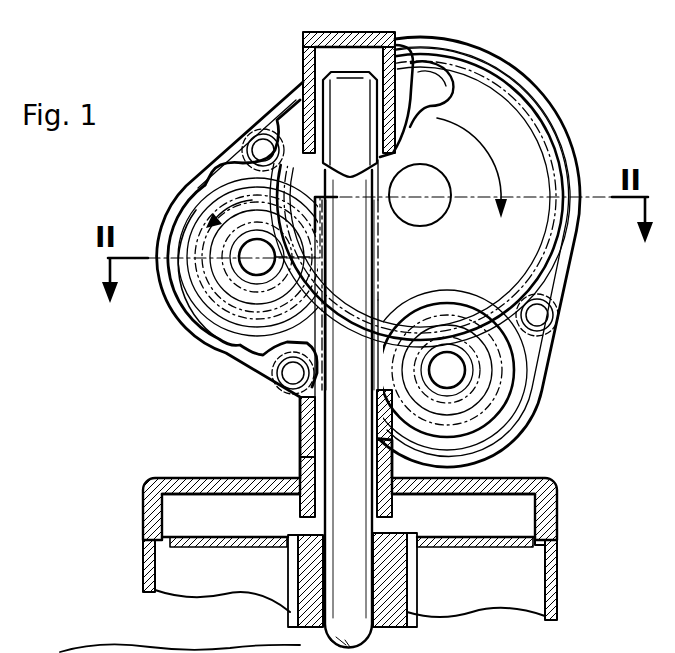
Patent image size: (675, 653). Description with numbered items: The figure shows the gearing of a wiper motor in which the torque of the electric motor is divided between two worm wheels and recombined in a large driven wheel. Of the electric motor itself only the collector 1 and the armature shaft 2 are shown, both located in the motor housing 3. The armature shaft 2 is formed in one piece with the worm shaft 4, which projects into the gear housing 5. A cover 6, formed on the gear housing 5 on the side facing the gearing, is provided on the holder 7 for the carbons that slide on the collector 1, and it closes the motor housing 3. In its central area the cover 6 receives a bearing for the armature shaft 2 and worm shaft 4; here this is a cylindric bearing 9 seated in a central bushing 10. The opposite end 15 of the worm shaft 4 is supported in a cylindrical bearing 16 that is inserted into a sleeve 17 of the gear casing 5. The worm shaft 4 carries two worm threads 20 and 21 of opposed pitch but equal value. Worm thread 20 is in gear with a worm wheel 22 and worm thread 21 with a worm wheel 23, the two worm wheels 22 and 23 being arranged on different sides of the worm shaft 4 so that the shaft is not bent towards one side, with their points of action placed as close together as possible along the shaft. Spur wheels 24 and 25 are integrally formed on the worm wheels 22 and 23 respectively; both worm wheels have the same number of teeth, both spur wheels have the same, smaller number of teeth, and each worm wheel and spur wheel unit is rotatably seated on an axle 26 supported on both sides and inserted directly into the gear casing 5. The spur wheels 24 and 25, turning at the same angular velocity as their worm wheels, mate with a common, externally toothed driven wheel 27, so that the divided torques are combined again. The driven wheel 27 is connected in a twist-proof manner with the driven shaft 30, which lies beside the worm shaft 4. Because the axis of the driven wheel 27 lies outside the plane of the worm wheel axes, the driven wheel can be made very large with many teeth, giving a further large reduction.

The collector 1 is at (312, 573).
The armature shaft 2 is at (353, 587).
The motor housing 3 is at (553, 572).
The worm shaft 4 is at (367, 177).
The gear housing 5 is at (557, 298).
The cover 6 is at (553, 488).
The holder 7 is at (477, 547).
The cylindric bearing 9 is at (313, 465).
The central bushing 10 is at (308, 422).
The end of the worm shaft 15 is at (302, 87).
The cylindrical bearing 16 is at (440, 82).
The sleeve 17 is at (405, 112).
The worm thread 20 is at (353, 258).
The worm thread 21 is at (242, 352).
The worm wheel 22 is at (500, 377).
The worm wheel 23 is at (213, 287).
The spur wheel 24 is at (473, 360).
The spur wheel 25 is at (218, 220).
The axle 26 is at (247, 275).
The driven wheel 27 is at (520, 240).
The driven shaft 30 is at (440, 193).